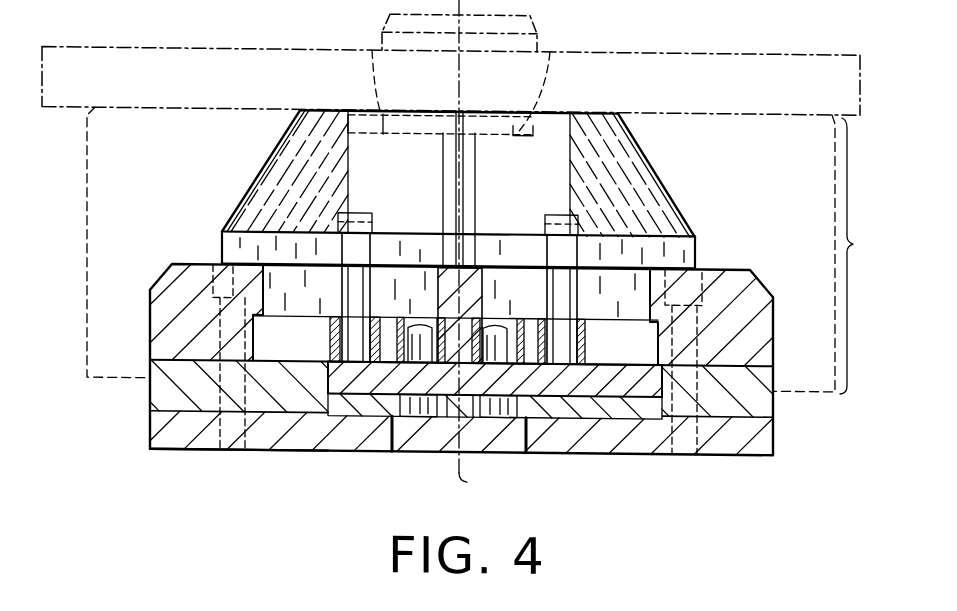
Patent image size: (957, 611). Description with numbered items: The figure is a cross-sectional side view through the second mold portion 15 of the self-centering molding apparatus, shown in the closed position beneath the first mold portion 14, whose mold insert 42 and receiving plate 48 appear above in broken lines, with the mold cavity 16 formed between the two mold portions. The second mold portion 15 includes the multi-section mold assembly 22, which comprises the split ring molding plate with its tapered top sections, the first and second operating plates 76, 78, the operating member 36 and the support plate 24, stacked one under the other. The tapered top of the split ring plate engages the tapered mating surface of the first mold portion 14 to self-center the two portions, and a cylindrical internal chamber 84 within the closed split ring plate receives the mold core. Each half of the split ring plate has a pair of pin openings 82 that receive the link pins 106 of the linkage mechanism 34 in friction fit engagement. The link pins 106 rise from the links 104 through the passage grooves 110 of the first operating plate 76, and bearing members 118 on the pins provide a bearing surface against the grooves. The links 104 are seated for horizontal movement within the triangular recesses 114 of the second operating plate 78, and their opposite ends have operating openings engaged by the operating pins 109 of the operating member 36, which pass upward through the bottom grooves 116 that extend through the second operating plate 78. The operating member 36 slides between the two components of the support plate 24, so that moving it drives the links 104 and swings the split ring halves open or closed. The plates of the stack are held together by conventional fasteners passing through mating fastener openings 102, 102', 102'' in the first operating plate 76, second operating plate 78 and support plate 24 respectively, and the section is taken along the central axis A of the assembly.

The first mold portion 14 is at (183, 47).
The second mold portion 15 is at (700, 470).
The mold cavity 16 is at (363, 128).
The multi-section mold assembly 22 is at (831, 254).
The support plate 24 is at (214, 455).
The linkage mechanism 34 is at (348, 398).
The operating member 36 is at (487, 456).
The mold insert 42 is at (552, 50).
The receiving plate 48 is at (86, 254).
The first operating plate 76 is at (730, 318).
The second operating plate 78 is at (727, 405).
The pin openings 82 is at (597, 228).
The cylindrical internal chamber 84 is at (380, 112).
The fastener opening 102 is at (405, 263).
The fastener opening 102' is at (206, 376).
The fastener opening 102'' is at (204, 430).
The links 104 is at (538, 383).
The link pins 106 is at (560, 292).
The operating pins 109 is at (413, 318).
The passage grooves 110 is at (253, 323).
The triangular recesses 114 is at (255, 404).
The bottom grooves 116 is at (418, 412).
The bearing members 118 is at (383, 318).
The axis A is at (472, 253).